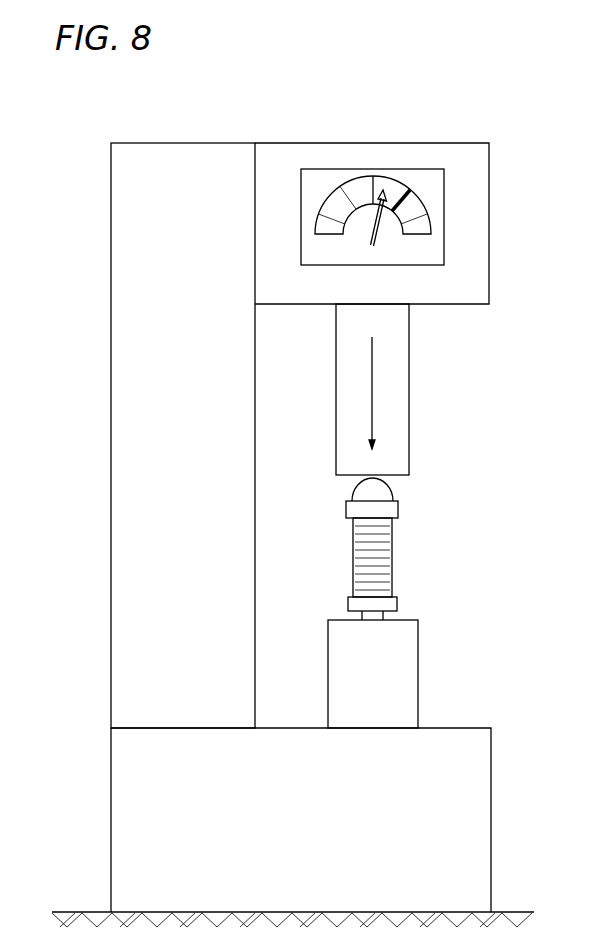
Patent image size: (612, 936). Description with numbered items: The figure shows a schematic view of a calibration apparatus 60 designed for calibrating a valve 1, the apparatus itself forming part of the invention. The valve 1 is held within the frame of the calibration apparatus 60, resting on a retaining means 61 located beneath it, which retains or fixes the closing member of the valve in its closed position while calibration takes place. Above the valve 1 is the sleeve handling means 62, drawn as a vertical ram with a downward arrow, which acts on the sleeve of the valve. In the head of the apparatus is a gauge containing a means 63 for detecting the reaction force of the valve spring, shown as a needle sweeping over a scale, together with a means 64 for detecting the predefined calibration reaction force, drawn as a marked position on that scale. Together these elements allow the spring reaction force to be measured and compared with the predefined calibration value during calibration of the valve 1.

The calibration apparatus 60 is at (108, 577).
The means for retaining or fixing the closing member 61 is at (423, 641).
The sleeve handling means 62 is at (418, 379).
The means for detecting the reaction force of the spring 63 is at (376, 192).
The means for detecting the predefined calibration reaction force 64 is at (404, 200).
The valve 1 is at (405, 553).